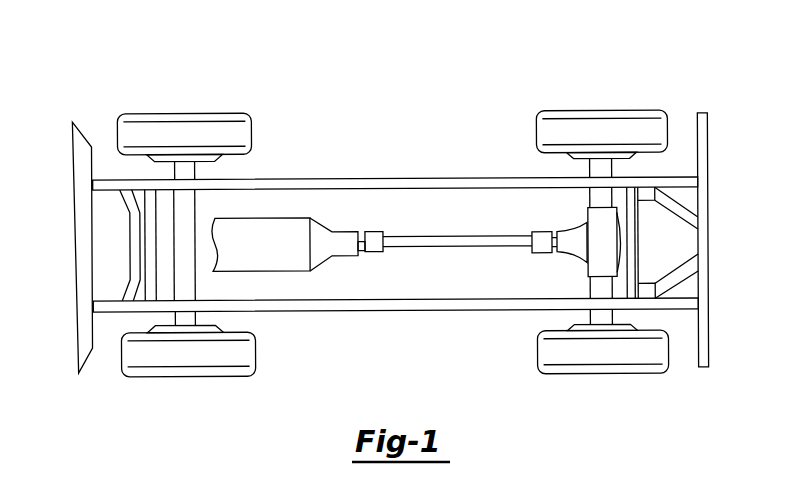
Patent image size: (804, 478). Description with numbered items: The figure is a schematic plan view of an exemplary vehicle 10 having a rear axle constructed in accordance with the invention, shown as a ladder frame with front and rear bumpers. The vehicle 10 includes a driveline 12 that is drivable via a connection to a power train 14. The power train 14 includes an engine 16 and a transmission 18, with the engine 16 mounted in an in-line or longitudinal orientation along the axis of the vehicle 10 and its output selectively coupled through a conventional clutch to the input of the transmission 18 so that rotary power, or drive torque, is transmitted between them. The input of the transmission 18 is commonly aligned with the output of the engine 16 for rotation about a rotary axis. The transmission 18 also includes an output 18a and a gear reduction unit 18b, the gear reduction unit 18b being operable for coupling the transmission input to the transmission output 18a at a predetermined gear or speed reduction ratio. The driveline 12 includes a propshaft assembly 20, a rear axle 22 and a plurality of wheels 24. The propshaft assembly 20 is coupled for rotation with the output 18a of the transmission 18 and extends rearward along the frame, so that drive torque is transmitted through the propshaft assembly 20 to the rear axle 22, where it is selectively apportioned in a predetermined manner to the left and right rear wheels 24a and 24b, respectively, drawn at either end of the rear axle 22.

The vehicle 10 is at (348, 126).
The driveline 12 is at (542, 225).
The power train 14 is at (277, 285).
The engine 16 is at (236, 254).
The transmission 18 is at (365, 242).
The transmission output 18a is at (360, 251).
The gear reduction unit 18b is at (330, 251).
The propshaft assembly 20 is at (433, 245).
The rear axle 22 is at (580, 272).
The wheels 24 is at (165, 383).
The left rear wheel 24a is at (548, 350).
The right rear wheel 24b is at (597, 126).